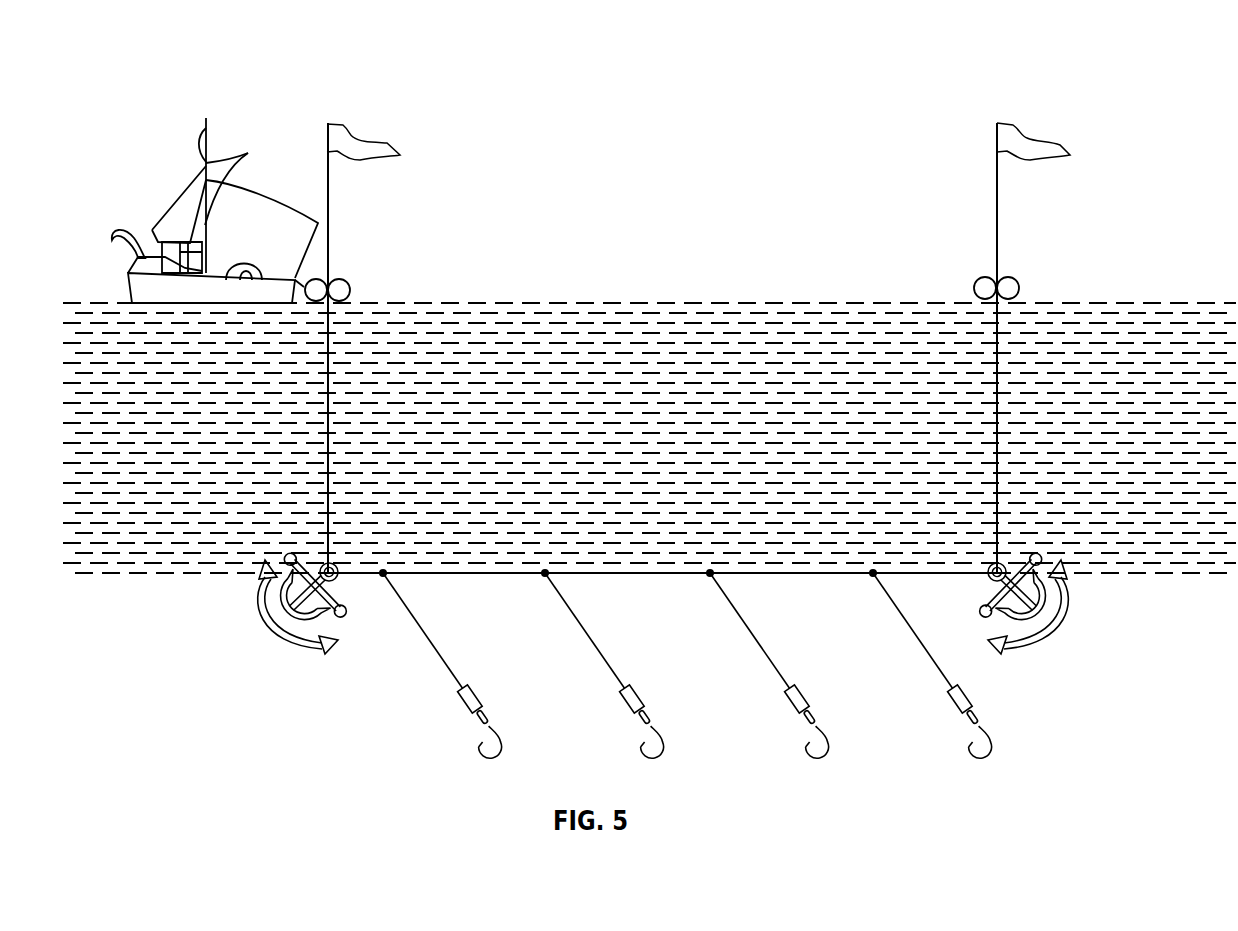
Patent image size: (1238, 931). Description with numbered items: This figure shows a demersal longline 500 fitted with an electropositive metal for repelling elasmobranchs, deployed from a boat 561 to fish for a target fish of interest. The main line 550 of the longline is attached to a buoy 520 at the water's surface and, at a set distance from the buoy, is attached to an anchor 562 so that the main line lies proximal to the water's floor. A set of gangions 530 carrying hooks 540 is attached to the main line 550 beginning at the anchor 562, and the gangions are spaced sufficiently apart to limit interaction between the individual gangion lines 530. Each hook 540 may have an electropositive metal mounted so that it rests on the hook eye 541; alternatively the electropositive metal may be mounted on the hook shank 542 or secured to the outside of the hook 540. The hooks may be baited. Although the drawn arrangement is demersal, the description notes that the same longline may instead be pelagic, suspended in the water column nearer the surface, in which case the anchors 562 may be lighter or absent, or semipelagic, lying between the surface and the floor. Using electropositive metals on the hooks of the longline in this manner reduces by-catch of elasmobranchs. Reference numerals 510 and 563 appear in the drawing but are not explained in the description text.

The longline 500 is at (184, 84).
The swivel 510 is at (966, 697).
The buoy 520 is at (1018, 285).
The gangion 530 is at (760, 652).
The hook 540 is at (986, 752).
The hook eye 541 is at (640, 722).
The hook shank 542 is at (825, 742).
The main line 550 is at (478, 574).
The boat 561 is at (130, 287).
The anchor 562 is at (265, 617).
The anchor line pole 563 is at (997, 357).